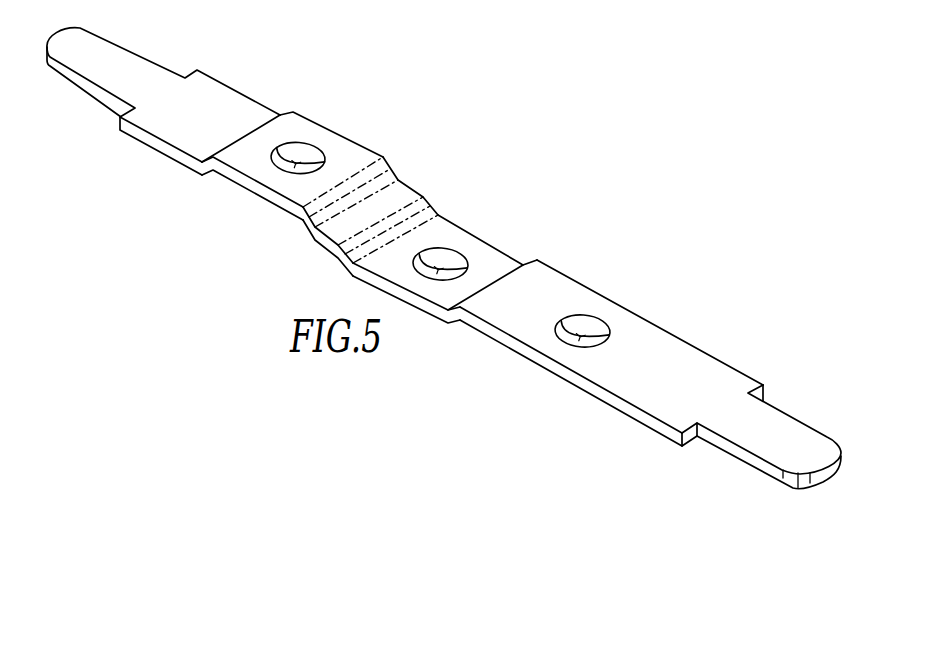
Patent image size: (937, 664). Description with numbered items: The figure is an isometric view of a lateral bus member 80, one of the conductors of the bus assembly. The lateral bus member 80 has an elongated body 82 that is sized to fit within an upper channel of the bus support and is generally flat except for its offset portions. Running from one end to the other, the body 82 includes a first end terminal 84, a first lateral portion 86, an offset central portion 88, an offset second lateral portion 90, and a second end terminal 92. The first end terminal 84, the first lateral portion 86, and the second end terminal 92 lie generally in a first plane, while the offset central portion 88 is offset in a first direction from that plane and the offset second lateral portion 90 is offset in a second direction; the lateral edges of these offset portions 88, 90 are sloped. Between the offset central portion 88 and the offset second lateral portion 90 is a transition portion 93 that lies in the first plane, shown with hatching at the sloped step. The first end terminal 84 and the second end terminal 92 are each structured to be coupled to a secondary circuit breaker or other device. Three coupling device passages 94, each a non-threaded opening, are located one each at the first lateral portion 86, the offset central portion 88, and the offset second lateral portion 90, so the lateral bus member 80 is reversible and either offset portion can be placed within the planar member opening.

The lateral bus member 80 is at (263, 76).
The elongated body 82 is at (643, 333).
The first end terminal 84 is at (733, 450).
The first lateral portion 86 is at (615, 383).
The offset central portion 88 is at (477, 248).
The offset second lateral portion 90 is at (325, 136).
The second end terminal 92 is at (137, 72).
The transition portion 93 is at (408, 192).
The coupling device passage 94 is at (283, 149).